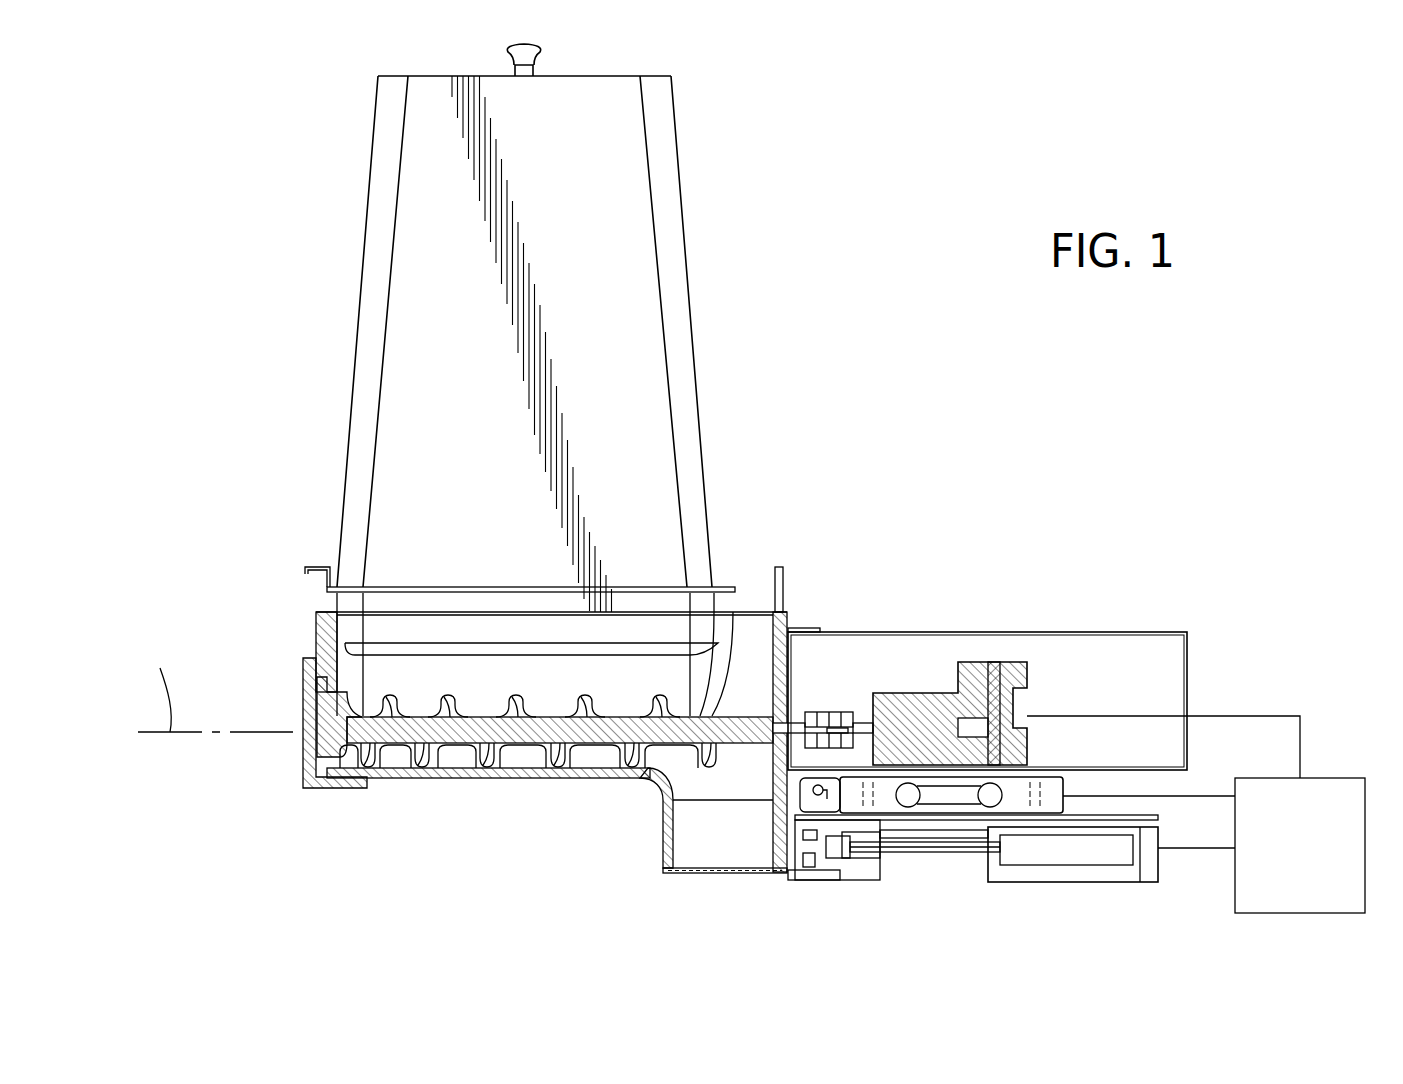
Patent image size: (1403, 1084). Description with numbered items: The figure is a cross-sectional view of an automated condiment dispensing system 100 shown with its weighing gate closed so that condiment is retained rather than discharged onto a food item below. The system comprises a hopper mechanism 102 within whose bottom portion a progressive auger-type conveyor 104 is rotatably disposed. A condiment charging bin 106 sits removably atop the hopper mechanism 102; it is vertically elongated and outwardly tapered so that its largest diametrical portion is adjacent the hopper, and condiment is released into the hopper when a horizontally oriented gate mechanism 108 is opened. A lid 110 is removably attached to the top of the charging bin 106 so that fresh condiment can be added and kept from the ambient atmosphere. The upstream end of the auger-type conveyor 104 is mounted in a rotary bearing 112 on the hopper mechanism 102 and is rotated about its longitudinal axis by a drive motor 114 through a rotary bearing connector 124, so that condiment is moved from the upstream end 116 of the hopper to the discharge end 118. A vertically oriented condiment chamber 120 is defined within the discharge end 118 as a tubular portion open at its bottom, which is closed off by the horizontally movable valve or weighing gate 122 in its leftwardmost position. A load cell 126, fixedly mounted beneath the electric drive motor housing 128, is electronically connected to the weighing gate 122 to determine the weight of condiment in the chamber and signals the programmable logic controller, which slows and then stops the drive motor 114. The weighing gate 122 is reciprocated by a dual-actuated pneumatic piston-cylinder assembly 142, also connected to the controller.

The automated condiment dispensing system 100 is at (802, 395).
The hopper mechanism 102 is at (303, 676).
The auger-type conveyor 104 is at (458, 745).
The condiment charging bin 106 is at (620, 243).
The gate mechanism 108 is at (310, 572).
The lid 110 is at (372, 160).
The rotary bearing 112 is at (303, 770).
The drive motor 114 is at (919, 692).
The upstream end 116 is at (370, 715).
The discharge end 118 is at (773, 688).
The condiment chamber 120 is at (703, 830).
The weighing gate 122 is at (760, 872).
The rotary bearing connector 124 is at (834, 712).
The load cell 126 is at (1050, 778).
The electric drive motor housing 128 is at (1020, 633).
The pneumatic piston-cylinder assembly 142 is at (1073, 842).